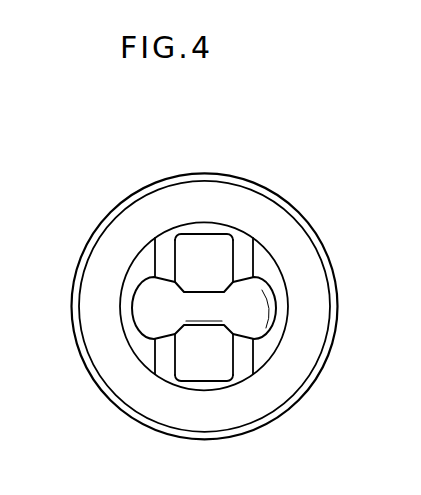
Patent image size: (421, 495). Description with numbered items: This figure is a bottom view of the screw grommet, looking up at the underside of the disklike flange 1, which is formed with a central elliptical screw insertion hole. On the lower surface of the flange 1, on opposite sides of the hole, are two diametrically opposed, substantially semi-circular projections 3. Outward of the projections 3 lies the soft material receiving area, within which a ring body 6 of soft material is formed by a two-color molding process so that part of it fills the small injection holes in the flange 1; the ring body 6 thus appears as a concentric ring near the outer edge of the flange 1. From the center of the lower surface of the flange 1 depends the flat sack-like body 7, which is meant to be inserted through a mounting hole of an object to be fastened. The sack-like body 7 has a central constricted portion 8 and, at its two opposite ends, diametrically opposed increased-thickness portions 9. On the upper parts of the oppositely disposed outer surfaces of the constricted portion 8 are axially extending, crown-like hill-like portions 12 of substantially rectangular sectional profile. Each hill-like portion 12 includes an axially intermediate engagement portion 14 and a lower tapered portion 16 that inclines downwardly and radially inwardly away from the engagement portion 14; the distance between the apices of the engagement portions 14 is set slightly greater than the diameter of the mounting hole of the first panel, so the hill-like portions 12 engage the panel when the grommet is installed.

The disklike flange 1 is at (277, 192).
The semi-circular projections 3 is at (125, 290).
The ring body 6 is at (190, 193).
The flat sack-like body 7 is at (152, 333).
The central constricted portion 8 is at (203, 315).
The increased-thickness portions 9 is at (268, 290).
The hill-like portions 12 is at (220, 245).
The engagement portion 14 is at (208, 234).
The lower tapered portion 16 is at (183, 247).